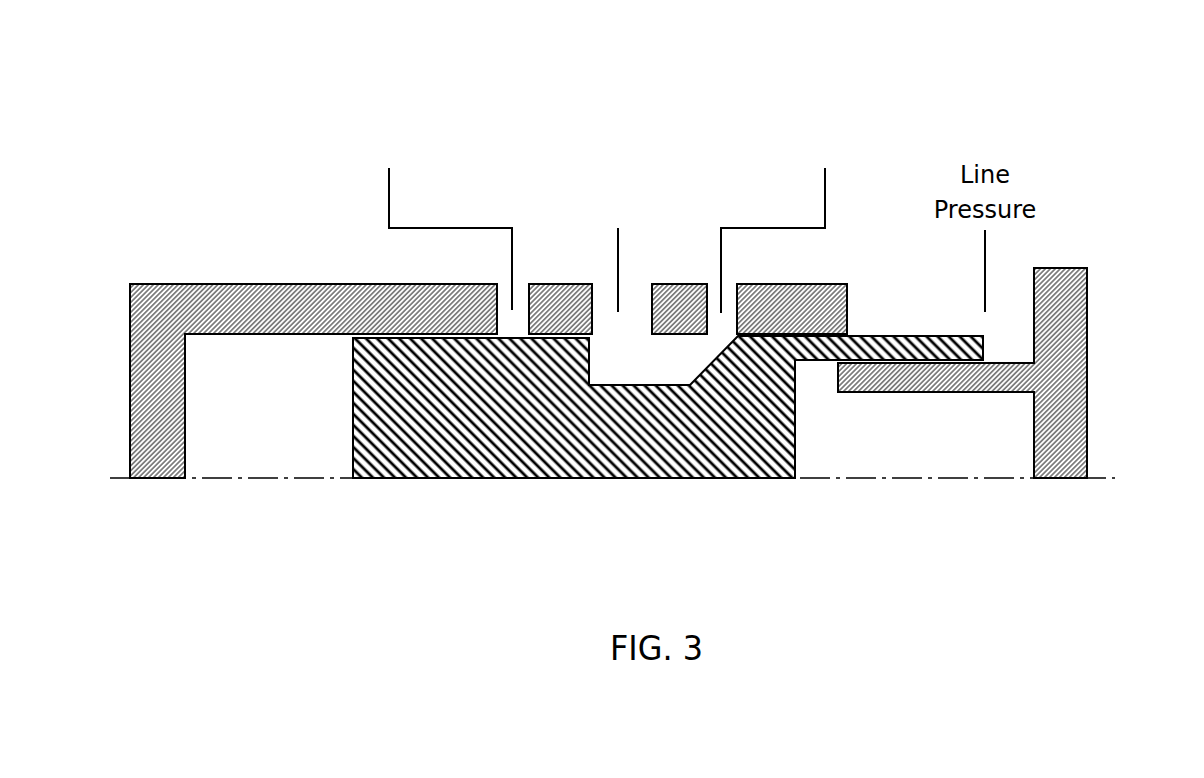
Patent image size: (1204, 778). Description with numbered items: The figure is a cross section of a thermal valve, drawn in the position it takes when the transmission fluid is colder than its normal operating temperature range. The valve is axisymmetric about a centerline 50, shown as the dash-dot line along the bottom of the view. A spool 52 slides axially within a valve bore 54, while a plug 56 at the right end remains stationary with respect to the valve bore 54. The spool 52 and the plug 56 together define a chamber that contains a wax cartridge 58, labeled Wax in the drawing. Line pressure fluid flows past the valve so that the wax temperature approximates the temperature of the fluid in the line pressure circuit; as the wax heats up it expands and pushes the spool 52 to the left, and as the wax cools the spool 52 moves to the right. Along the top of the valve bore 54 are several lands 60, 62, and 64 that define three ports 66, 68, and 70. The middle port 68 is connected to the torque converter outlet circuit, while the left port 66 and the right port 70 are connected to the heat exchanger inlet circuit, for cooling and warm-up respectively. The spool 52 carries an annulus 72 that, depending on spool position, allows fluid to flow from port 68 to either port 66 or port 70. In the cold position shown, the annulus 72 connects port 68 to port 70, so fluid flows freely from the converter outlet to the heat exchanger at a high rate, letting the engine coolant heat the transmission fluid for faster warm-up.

The centerline 50 is at (250, 480).
The spool 52 is at (353, 435).
The valve bore 54 is at (257, 284).
The plug 56 is at (1087, 347).
The wax cartridge 58 is at (990, 449).
The land 60 is at (563, 283).
The land 62 is at (680, 283).
The land 64 is at (835, 283).
The left port 66 is at (460, 222).
The middle port 68 is at (618, 248).
The right port 70 is at (768, 228).
The annulus 72 is at (661, 377).